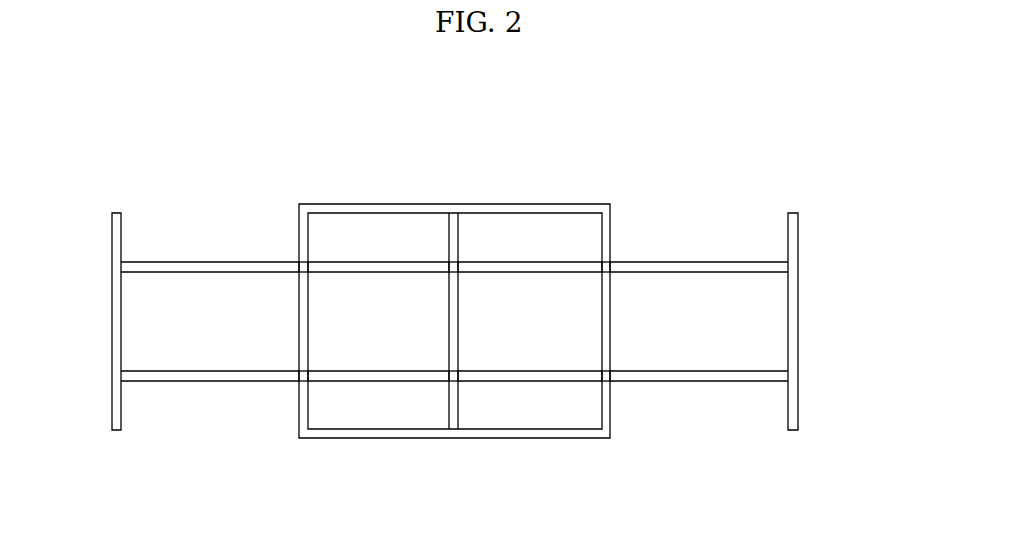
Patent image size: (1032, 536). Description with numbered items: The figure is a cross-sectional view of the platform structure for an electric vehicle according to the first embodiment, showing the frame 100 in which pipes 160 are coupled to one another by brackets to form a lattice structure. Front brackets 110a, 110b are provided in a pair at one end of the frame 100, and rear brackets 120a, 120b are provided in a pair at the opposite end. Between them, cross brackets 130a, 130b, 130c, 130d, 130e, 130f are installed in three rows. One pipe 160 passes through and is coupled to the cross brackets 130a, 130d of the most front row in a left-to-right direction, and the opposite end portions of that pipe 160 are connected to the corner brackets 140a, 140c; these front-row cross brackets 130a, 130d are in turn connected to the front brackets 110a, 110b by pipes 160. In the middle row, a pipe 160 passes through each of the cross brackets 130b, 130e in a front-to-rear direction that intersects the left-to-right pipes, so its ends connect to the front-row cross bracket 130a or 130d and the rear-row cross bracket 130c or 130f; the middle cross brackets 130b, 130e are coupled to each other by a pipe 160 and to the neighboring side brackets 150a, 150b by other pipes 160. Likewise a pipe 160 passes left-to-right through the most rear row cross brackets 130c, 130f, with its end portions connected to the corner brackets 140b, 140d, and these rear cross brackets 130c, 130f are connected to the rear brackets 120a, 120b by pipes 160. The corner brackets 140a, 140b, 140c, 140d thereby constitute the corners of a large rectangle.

The frame 100 is at (917, 117).
The front bracket 110a is at (782, 260).
The front bracket 110b is at (782, 383).
The rear bracket 120a is at (112, 263).
The rear bracket 120b is at (112, 365).
The cross bracket 130a is at (620, 260).
The cross bracket 130b is at (447, 258).
The cross bracket 130c is at (298, 262).
The cross bracket 130d is at (612, 385).
The cross bracket 130e is at (448, 392).
The cross bracket 130f is at (297, 385).
The corner bracket 140a is at (593, 203).
The corner bracket 140b is at (310, 203).
The corner bracket 140c is at (590, 440).
The corner bracket 140d is at (310, 440).
The side bracket 150a is at (448, 203).
The side bracket 150b is at (447, 440).
The pipe 160 is at (198, 262).